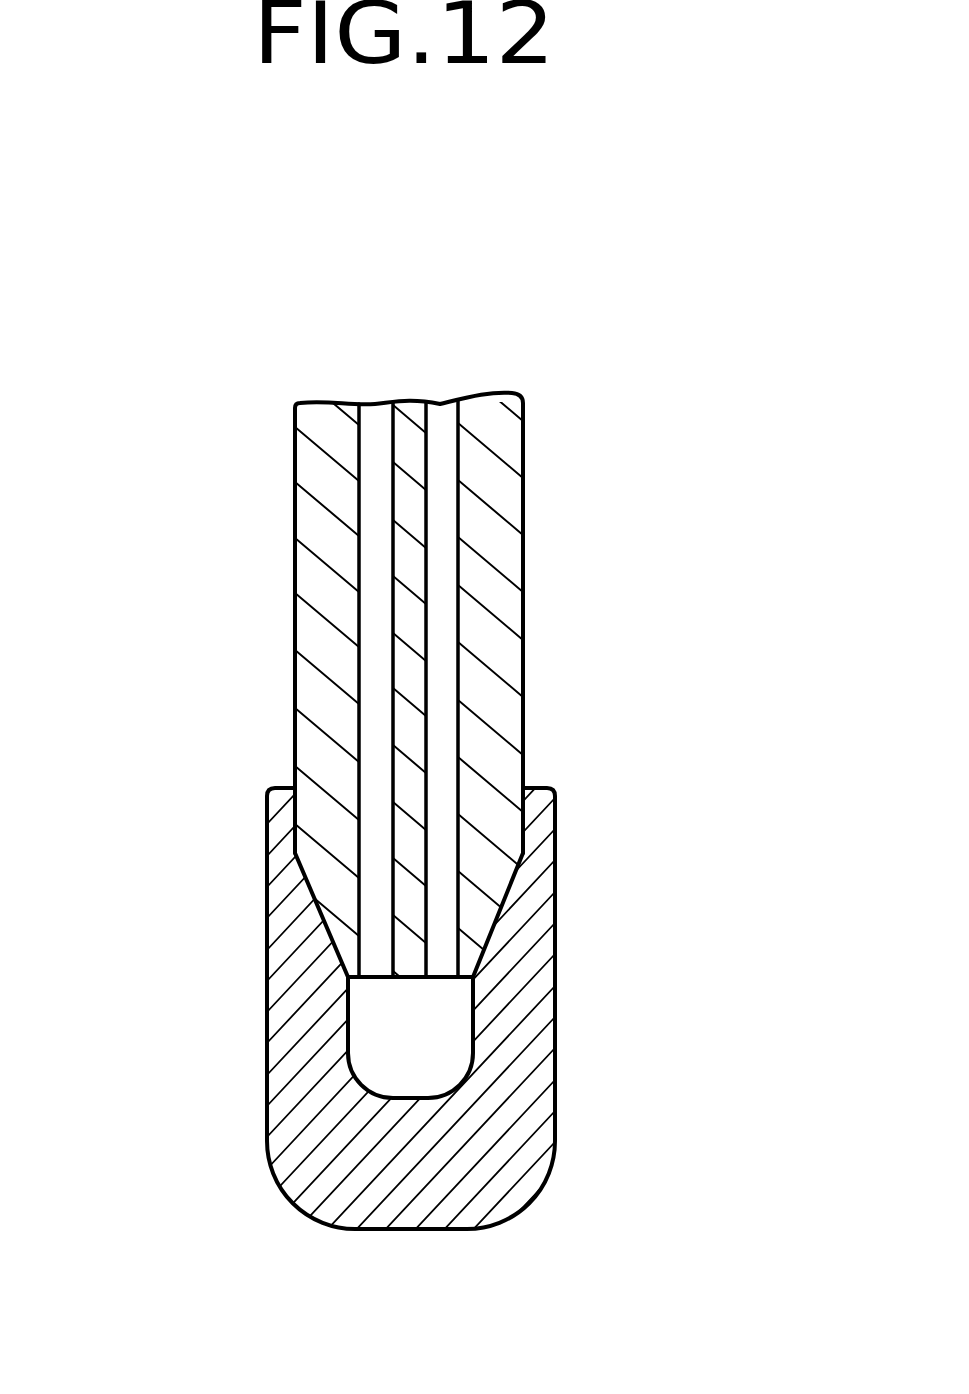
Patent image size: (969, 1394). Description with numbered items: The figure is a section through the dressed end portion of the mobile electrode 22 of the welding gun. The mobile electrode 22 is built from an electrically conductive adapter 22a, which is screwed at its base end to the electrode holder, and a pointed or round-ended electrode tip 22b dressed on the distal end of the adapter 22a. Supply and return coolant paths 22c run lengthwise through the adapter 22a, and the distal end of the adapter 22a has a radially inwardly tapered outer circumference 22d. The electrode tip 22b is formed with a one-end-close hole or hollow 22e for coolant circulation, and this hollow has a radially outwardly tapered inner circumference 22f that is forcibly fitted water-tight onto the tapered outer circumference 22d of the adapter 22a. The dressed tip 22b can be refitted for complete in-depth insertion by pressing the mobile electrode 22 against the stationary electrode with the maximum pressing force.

The mobile electrode 22 is at (252, 527).
The adapter 22a is at (525, 478).
The electrode tip 22b is at (556, 1072).
The supply and return coolant paths 22c is at (456, 442).
The radially inwardly tapered outer circumference 22d is at (505, 896).
The one-end-close hole 22e is at (352, 1048).
The radially outwardly tapered inner circumference 22f is at (298, 853).